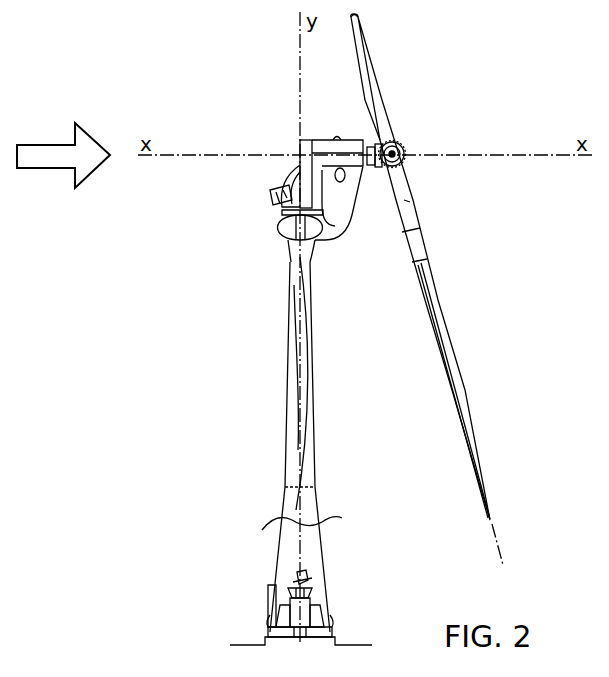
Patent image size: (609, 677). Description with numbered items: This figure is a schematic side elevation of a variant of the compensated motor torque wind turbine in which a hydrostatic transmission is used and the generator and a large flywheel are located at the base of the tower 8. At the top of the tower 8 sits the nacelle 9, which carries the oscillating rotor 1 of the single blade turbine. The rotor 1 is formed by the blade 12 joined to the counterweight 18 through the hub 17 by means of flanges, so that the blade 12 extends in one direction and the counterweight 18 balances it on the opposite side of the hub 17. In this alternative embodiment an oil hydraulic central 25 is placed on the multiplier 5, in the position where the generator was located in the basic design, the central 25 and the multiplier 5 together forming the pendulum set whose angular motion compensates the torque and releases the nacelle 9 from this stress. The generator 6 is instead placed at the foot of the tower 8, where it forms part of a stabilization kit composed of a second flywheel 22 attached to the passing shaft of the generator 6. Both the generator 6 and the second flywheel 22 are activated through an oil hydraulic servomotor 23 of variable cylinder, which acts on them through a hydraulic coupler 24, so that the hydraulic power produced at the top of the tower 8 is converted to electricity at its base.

The rotor 1 is at (405, 160).
The multiplier 5 is at (298, 148).
The generator 6 is at (293, 612).
The tower 8 is at (295, 353).
The nacelle 9 is at (280, 233).
The blade 12 is at (432, 295).
The hub 17 is at (412, 198).
The counterweight 18 is at (358, 17).
The second flywheel 22 is at (297, 628).
The oil hydraulic servomotor 23 is at (300, 577).
The hydraulic coupler 24 is at (290, 598).
The oil hydraulic central 25 is at (268, 196).